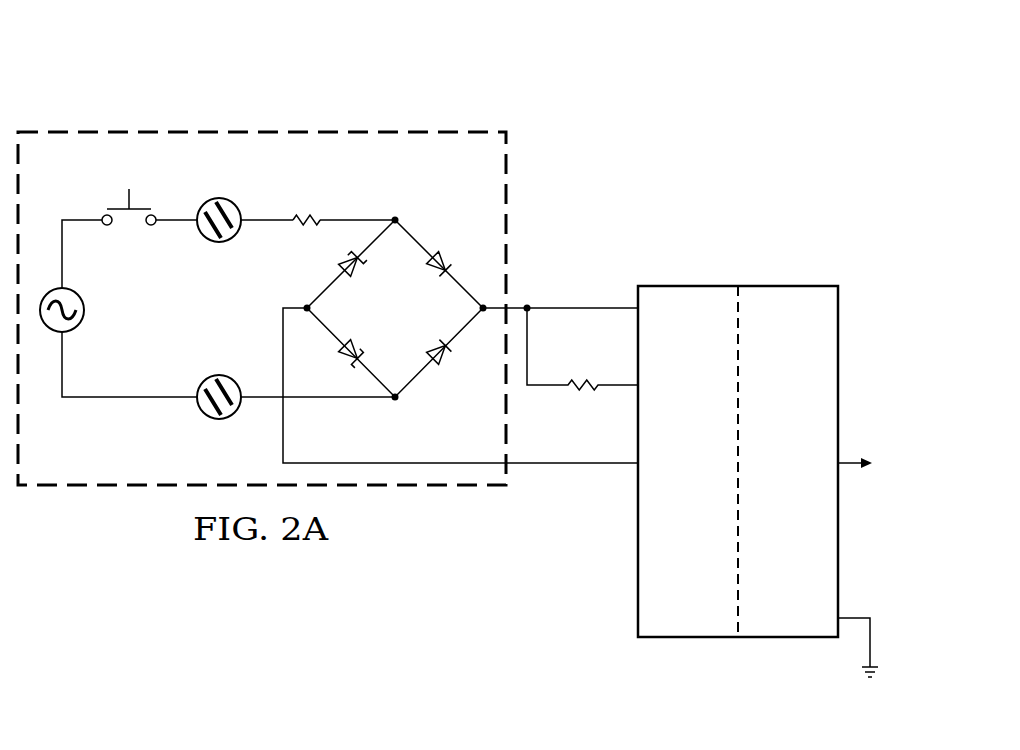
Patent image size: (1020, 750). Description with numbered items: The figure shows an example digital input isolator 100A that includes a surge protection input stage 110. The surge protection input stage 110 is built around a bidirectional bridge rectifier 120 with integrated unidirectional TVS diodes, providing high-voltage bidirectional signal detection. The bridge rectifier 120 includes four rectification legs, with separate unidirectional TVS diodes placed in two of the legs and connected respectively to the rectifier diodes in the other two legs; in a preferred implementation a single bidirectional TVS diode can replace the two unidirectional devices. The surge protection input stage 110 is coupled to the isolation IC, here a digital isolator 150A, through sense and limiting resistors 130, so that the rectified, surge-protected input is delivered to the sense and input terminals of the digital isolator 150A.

The digital input isolator 100A is at (560, 85).
The surge protection input stage 110 is at (178, 128).
The bridge rectifier 120 is at (415, 324).
The sense resistors 130 is at (583, 307).
The digital isolator 150A is at (769, 647).